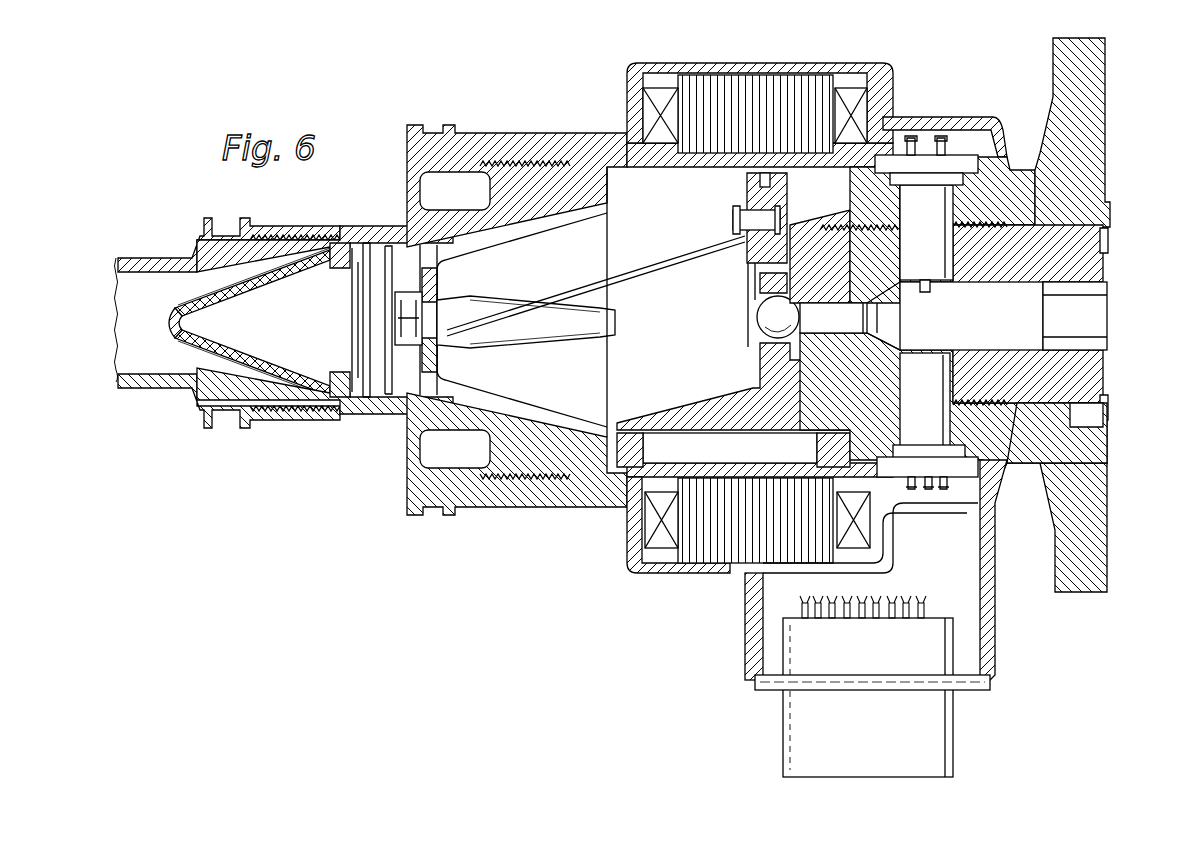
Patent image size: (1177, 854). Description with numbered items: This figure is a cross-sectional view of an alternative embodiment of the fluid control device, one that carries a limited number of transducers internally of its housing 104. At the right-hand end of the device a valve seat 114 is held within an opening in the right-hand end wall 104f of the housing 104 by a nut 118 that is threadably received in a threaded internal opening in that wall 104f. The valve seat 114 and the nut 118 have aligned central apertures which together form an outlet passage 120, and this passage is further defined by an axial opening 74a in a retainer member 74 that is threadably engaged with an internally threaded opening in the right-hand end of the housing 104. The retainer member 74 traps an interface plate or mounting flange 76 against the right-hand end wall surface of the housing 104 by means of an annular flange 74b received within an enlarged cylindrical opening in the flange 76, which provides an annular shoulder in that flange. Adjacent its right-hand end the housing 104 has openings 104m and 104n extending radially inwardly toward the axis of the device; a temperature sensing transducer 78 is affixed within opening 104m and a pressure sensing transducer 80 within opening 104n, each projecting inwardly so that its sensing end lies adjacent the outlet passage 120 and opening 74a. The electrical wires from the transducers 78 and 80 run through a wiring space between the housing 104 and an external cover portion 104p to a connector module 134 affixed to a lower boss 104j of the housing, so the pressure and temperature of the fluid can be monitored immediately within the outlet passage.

The retainer member 74 is at (1107, 350).
The axial opening 74a is at (1093, 312).
The annular flange 74b is at (1103, 446).
The mounting flange 76 is at (1053, 44).
The temperature sensing transducer 78 is at (946, 174).
The pressure sensing transducer 80 is at (975, 470).
The housing 104 is at (1007, 166).
The right-hand end wall 104f is at (802, 222).
The lower boss 104j is at (987, 627).
The opening 104m is at (950, 221).
The opening 104n is at (950, 422).
The external cover portion 104p is at (837, 64).
The valve seat 114 is at (812, 267).
The nut 118 is at (853, 228).
The outlet passage 120 is at (883, 318).
The connector module 134 is at (927, 728).